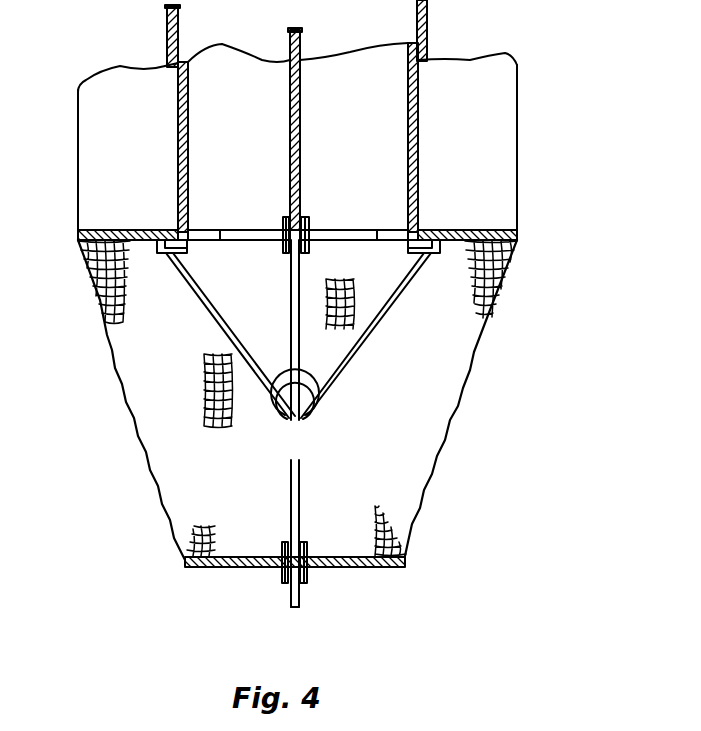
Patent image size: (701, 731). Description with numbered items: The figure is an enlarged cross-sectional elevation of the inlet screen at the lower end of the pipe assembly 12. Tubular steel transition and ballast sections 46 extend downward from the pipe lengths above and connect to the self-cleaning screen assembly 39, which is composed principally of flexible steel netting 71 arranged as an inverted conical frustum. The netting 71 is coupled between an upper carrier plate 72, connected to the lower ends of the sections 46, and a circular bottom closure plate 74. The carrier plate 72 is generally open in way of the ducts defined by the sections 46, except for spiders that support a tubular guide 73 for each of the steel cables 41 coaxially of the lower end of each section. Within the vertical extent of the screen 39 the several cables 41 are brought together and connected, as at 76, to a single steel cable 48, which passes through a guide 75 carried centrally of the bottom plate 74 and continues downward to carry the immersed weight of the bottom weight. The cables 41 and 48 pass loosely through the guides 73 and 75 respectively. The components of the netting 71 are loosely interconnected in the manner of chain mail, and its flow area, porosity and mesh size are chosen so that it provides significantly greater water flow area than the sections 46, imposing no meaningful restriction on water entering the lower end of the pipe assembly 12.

The pipe assembly 12 is at (543, 127).
The self-cleaning screen assembly 39 is at (273, 400).
The steel cables 41 is at (180, 28).
The transition and ballast section 46 is at (78, 140).
The single steel cable 48 is at (292, 593).
The flexible steel netting 71 is at (110, 398).
The upper carrier plate 72 is at (105, 265).
The tubular guide 73 is at (312, 214).
The circular bottom closure plate 74 is at (197, 570).
The guide 75 is at (307, 581).
The connection 76 is at (320, 433).